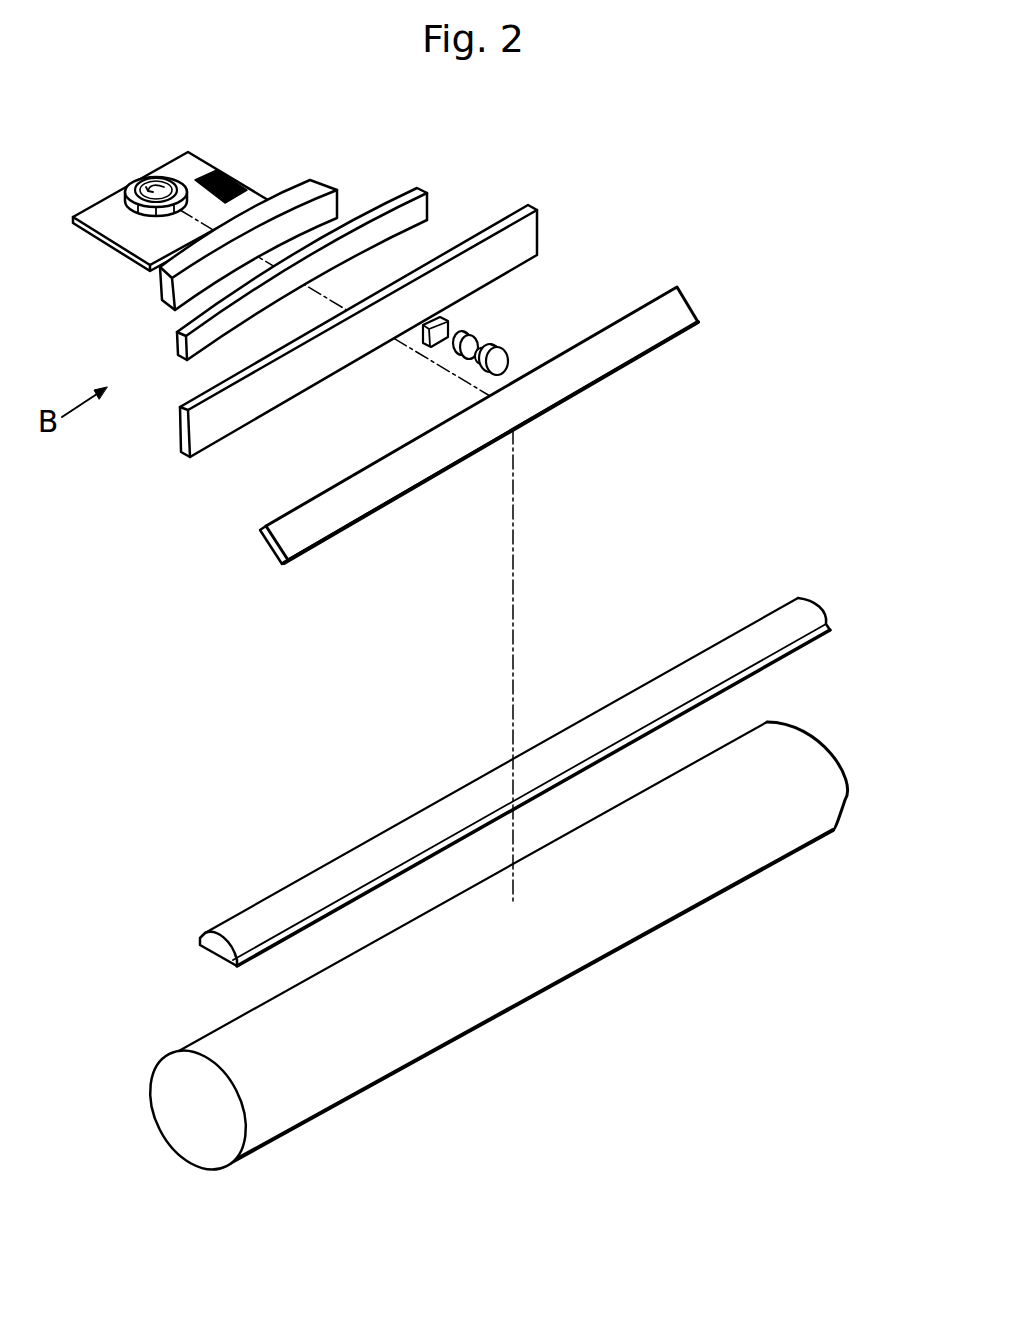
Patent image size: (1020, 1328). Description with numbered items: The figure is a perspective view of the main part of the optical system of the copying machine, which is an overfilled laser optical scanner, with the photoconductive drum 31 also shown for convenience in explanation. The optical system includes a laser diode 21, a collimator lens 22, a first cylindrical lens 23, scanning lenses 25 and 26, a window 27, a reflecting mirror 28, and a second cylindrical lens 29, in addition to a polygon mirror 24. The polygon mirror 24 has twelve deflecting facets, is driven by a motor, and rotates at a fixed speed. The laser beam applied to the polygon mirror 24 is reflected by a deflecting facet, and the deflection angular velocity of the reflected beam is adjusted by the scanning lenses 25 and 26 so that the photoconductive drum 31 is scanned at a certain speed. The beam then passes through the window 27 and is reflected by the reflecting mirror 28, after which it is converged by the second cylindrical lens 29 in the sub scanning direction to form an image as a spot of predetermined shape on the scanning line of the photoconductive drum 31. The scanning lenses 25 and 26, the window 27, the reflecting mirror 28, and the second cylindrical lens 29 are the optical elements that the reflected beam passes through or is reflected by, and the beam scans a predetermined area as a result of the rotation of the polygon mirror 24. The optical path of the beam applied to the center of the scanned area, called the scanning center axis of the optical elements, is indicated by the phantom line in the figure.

The laser diode 21 is at (498, 352).
The collimator lens 22 is at (468, 337).
The first cylindrical lens 23 is at (443, 318).
The polygon mirror 24 is at (135, 181).
The scanning lens 25 is at (163, 305).
The scanning lens 26 is at (180, 358).
The window 27 is at (538, 222).
The reflecting mirror 28 is at (690, 300).
The second cylindrical lens 29 is at (817, 612).
The photoconductive drum 31 is at (847, 798).